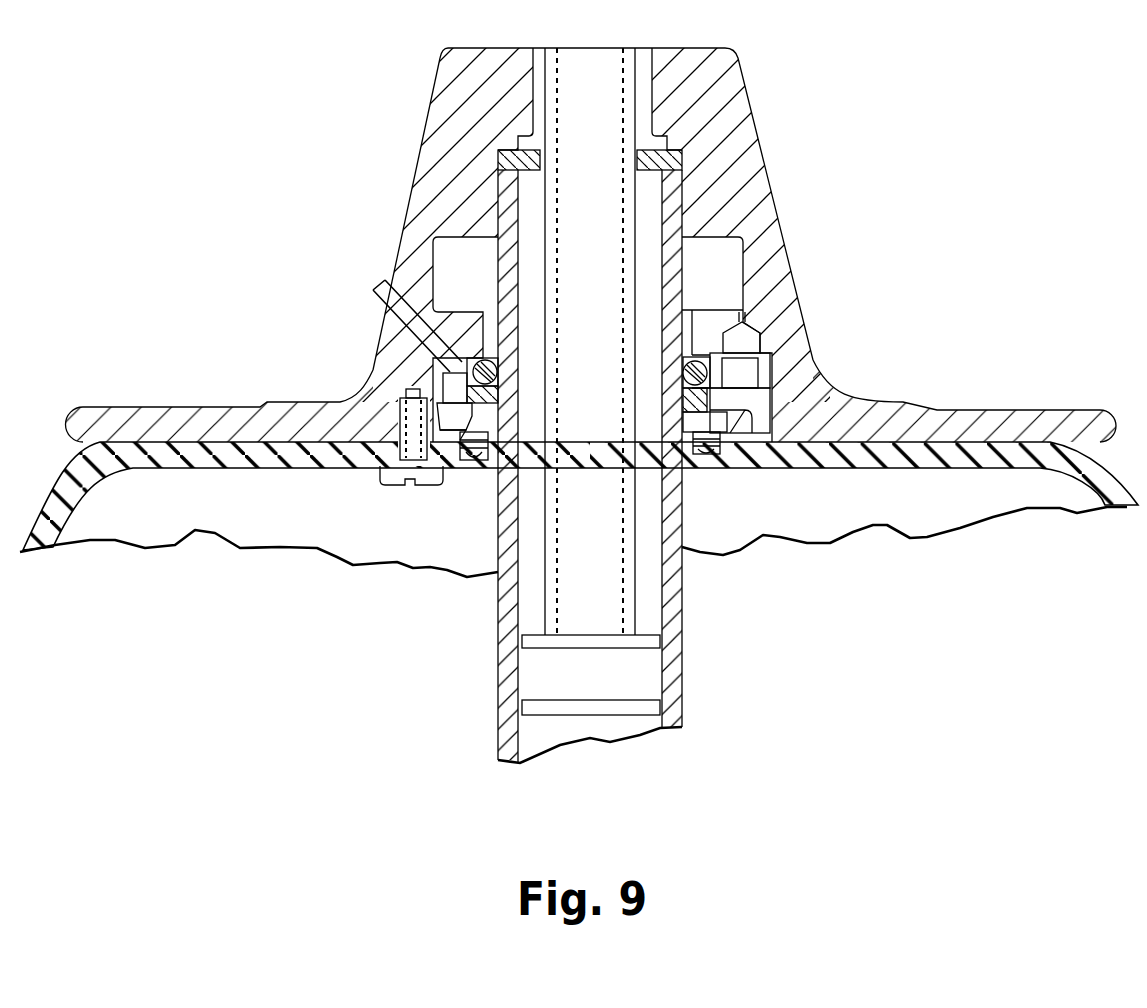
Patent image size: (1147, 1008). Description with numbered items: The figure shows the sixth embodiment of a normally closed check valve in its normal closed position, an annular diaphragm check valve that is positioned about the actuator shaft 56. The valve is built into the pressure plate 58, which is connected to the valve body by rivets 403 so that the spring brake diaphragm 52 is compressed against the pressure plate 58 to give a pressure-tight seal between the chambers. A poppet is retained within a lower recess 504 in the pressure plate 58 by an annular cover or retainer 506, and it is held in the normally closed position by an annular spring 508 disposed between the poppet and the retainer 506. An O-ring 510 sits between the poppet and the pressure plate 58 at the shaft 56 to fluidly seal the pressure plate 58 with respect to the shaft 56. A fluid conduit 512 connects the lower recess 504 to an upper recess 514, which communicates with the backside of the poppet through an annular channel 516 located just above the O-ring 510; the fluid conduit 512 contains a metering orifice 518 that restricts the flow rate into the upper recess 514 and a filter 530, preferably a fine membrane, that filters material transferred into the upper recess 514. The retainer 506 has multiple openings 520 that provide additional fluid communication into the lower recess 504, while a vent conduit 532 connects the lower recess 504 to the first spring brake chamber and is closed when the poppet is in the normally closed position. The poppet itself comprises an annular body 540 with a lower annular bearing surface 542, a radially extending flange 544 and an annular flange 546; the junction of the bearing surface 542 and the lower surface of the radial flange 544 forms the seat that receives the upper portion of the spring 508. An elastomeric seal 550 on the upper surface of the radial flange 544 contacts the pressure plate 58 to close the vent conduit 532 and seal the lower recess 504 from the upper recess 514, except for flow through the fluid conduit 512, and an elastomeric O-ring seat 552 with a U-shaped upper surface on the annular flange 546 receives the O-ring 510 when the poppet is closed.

The spring brake diaphragm 52 is at (960, 468).
The actuator shaft 56 is at (683, 625).
The pressure plate 58 is at (1042, 413).
The rivets 403 is at (383, 486).
The lower recess 504 is at (870, 405).
The retainer 506 is at (708, 470).
The annular spring 508 is at (450, 473).
The O-ring 510 is at (757, 352).
The fluid conduit 512 is at (760, 403).
The upper recess 514 is at (707, 263).
The annular channel 516 is at (709, 308).
The metering orifice 518 is at (752, 324).
The openings 520 is at (752, 470).
The filter 530 is at (745, 408).
The vent conduit 532 is at (437, 385).
The annular body 540 is at (695, 418).
The lower annular bearing surface 542 is at (500, 435).
The radially extending flange 544 is at (437, 440).
The annular flange 546 is at (390, 281).
The seal 550 is at (435, 384).
The O-ring seat 552 is at (685, 380).